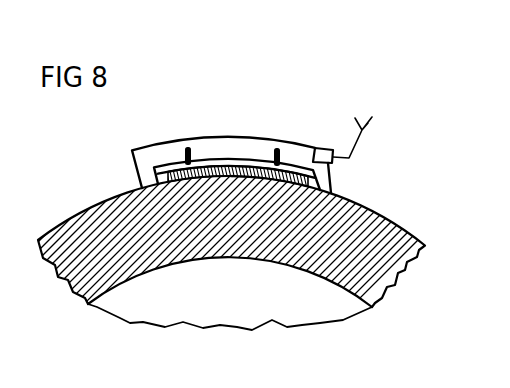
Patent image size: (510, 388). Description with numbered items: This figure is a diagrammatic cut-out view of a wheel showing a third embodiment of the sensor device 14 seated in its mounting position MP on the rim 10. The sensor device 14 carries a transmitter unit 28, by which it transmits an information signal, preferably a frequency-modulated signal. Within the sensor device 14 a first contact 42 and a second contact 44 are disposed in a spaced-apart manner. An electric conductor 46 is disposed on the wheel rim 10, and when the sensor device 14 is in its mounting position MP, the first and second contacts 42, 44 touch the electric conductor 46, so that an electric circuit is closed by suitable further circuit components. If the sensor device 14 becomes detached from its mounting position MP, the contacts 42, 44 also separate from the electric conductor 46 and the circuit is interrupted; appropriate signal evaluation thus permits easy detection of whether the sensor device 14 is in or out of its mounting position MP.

The rim 10 is at (255, 250).
The sensor device 14 is at (208, 141).
The transmitter unit 28 is at (320, 148).
The first contact 42 is at (187, 148).
The second contact 44 is at (268, 152).
The electric conductor 46 is at (272, 173).
The mounting position MP is at (232, 175).